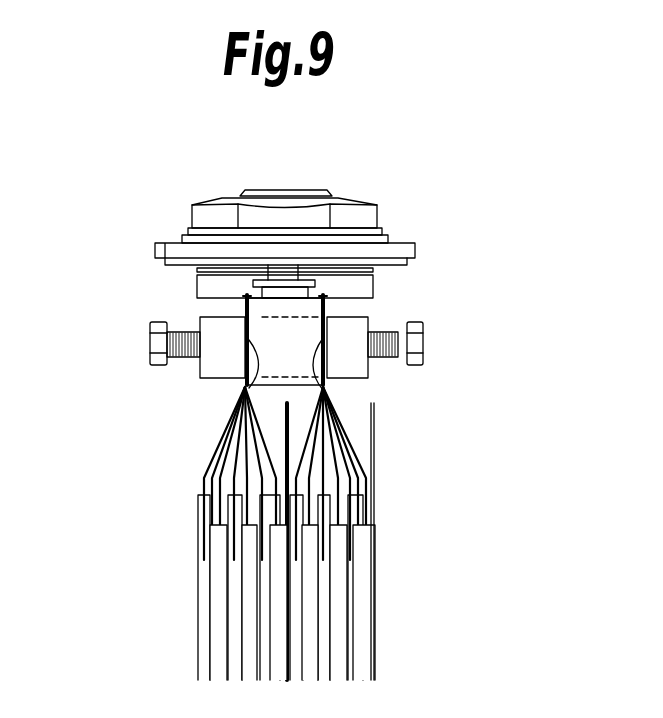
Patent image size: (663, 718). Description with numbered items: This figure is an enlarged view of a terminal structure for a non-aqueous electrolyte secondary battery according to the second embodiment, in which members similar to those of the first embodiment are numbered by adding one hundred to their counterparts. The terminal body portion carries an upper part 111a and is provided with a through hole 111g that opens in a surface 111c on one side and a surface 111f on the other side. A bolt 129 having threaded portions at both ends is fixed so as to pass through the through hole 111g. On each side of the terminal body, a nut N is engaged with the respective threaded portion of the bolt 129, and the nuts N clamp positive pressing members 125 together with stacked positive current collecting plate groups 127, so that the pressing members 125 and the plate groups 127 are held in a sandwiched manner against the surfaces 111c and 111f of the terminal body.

The cap nut of holder 111a is at (287, 190).
The through hole 111g is at (272, 318).
The surface 111f is at (245, 395).
The surface 111c is at (338, 410).
The positive pressing member 125 is at (358, 330).
The stacked positive current collecting plate group 127 is at (326, 310).
The bolt 129 is at (183, 357).
The nut N is at (148, 346).